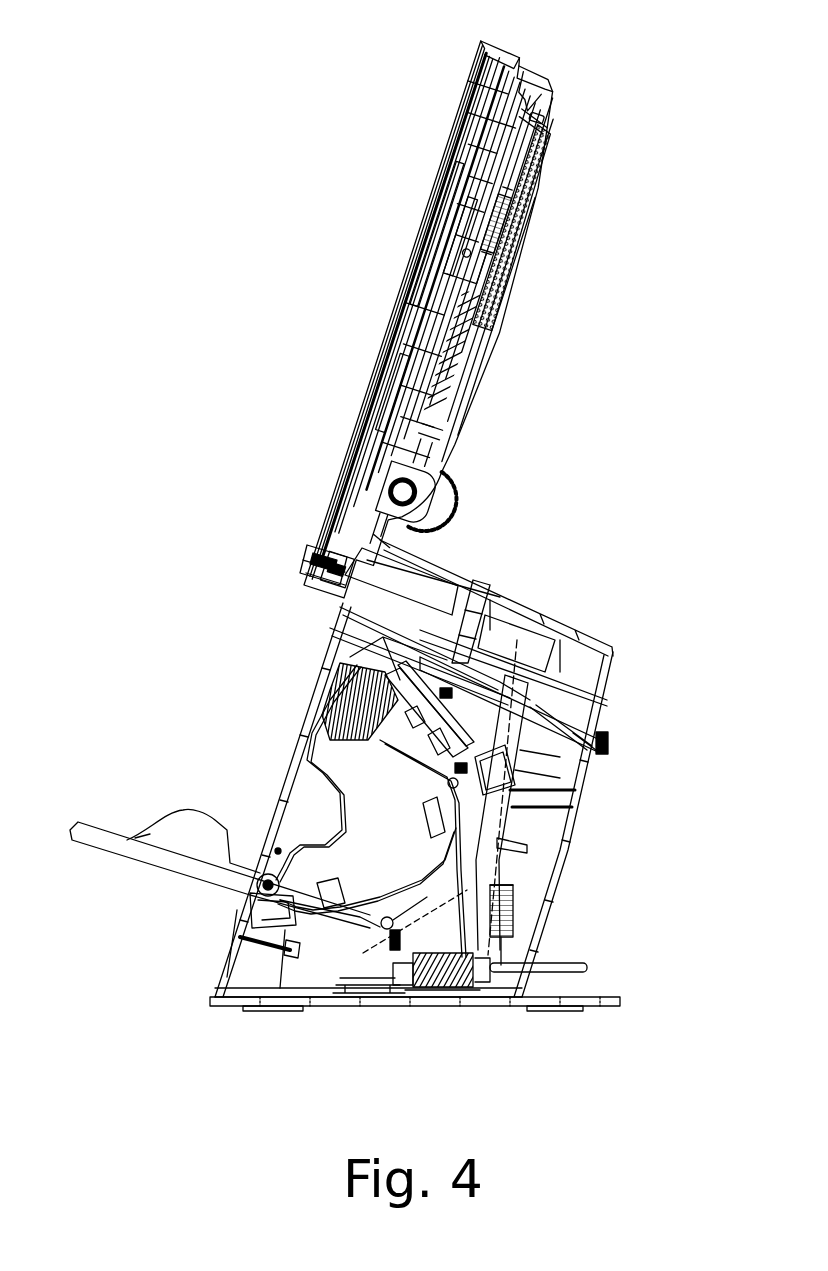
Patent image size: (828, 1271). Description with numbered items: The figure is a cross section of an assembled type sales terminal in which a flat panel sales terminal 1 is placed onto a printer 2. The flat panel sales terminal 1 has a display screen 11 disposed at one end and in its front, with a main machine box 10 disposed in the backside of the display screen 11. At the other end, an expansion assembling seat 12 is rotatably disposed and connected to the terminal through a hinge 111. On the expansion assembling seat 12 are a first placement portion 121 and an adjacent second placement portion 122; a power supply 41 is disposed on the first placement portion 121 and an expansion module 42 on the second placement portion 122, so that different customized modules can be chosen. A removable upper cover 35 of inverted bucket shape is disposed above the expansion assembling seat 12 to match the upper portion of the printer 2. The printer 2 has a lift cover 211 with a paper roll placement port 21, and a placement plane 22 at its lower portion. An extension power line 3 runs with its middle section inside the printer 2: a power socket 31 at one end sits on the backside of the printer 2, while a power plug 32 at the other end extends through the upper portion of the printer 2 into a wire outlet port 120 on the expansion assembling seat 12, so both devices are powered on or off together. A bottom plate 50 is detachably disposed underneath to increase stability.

The flat panel sales terminal 1 is at (530, 78).
The main machine box 10 is at (520, 240).
The display screen 11 is at (392, 305).
The hinge 111 is at (412, 488).
The expansion assembling seat 12 is at (330, 590).
The wire outlet port 120 is at (535, 690).
The first placement portion 121 is at (355, 688).
The second placement portion 122 is at (592, 752).
The printer 2 is at (260, 932).
The paper roll placement port 21 is at (300, 775).
The lift cover 211 is at (135, 840).
The placement plane 22 is at (333, 993).
The extension power line 3 is at (500, 780).
The power socket 31 is at (378, 970).
The power plug 32 is at (477, 583).
The removable upper cover 35 is at (588, 632).
The power supply 41 is at (400, 580).
The expansion module 42 is at (515, 668).
The bottom plate 50 is at (557, 1006).